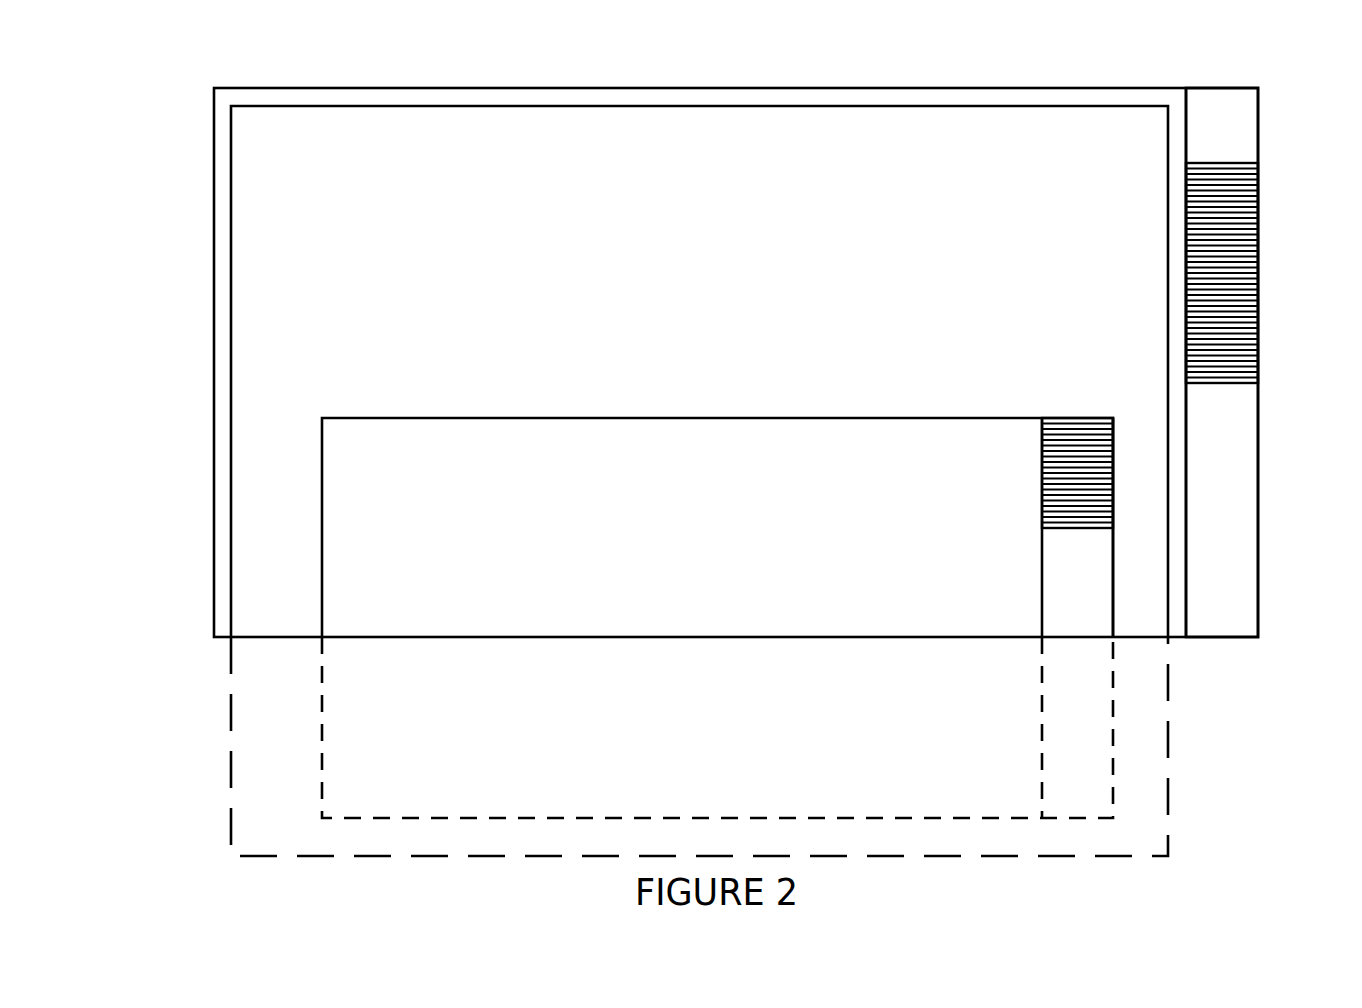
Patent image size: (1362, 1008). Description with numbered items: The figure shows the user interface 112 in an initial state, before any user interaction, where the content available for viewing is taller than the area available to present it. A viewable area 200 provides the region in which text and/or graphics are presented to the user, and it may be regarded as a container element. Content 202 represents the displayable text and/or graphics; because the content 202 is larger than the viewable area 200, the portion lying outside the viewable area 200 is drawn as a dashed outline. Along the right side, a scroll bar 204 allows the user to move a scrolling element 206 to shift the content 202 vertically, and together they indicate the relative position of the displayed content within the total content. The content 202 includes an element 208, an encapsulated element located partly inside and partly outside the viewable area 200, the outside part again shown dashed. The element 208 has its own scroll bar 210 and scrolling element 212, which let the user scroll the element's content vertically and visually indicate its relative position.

The user interface 112 is at (167, 62).
The viewable area 200 is at (573, 88).
The content 202 is at (232, 728).
The scroll bar 204 is at (1220, 457).
The scrolling element 206 is at (1220, 312).
The element 208 is at (680, 417).
The scroll bar 210 is at (1077, 675).
The scrolling element 212 is at (1077, 473).